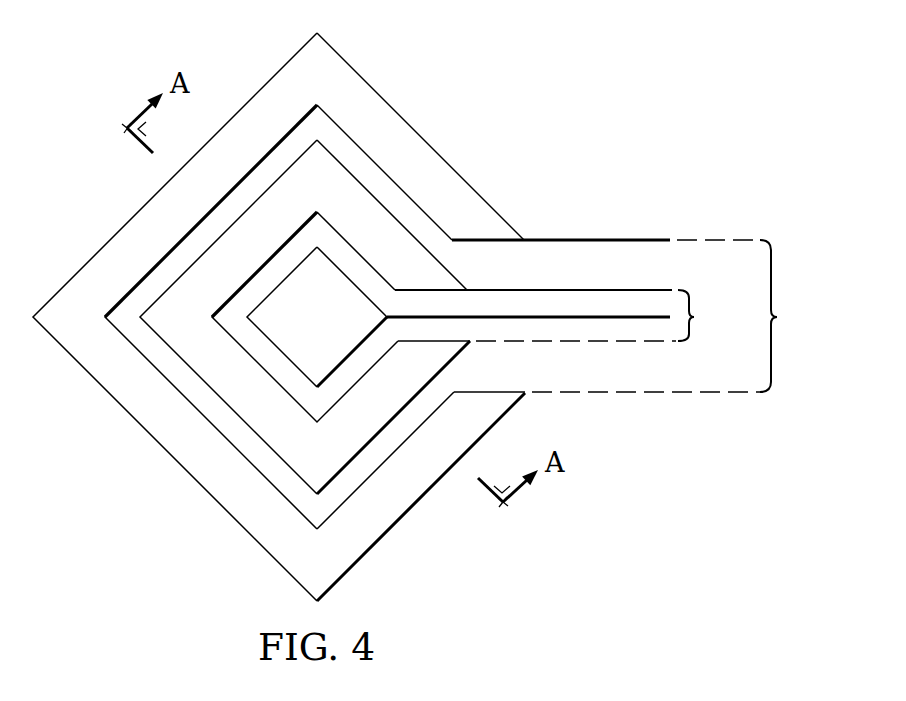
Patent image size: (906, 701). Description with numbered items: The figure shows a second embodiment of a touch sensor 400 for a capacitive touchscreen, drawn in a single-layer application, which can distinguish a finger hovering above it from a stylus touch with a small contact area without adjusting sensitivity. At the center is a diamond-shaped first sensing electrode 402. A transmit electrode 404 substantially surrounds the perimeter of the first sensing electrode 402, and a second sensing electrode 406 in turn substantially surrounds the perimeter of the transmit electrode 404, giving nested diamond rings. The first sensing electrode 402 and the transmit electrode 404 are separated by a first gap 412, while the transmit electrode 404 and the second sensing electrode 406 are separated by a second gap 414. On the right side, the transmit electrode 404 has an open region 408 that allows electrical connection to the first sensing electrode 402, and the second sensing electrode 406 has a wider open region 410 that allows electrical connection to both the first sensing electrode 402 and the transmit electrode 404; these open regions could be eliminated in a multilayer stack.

The touch sensor 400 is at (636, 90).
The first sensing electrode 402 is at (340, 329).
The transmit electrode 404 is at (188, 280).
The second sensing electrode 406 is at (417, 146).
The open region 408 is at (710, 315).
The open region 410 is at (793, 316).
The first gap 412 is at (328, 393).
The second gap 414 is at (305, 498).